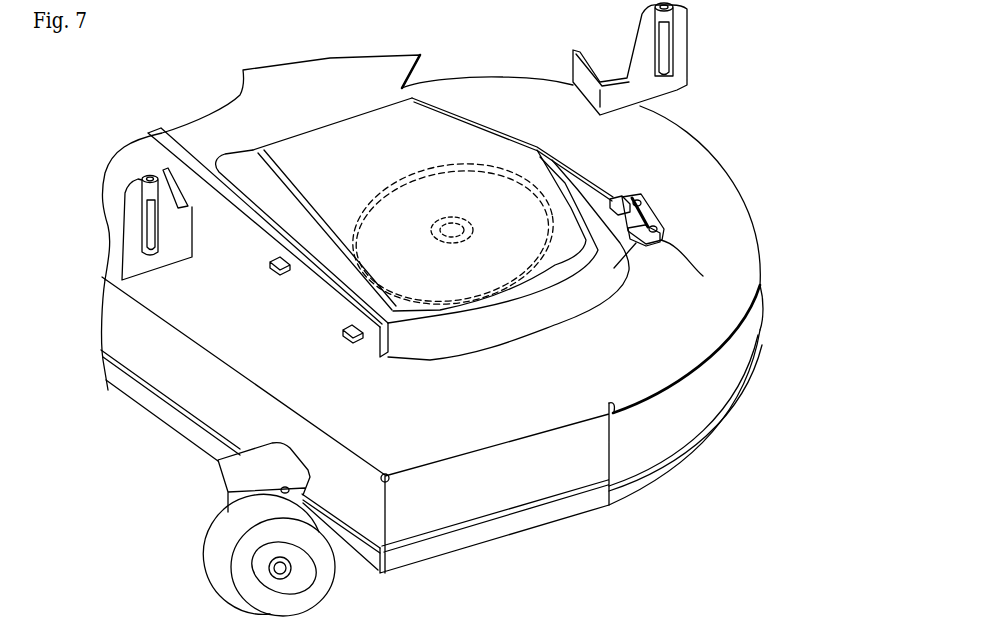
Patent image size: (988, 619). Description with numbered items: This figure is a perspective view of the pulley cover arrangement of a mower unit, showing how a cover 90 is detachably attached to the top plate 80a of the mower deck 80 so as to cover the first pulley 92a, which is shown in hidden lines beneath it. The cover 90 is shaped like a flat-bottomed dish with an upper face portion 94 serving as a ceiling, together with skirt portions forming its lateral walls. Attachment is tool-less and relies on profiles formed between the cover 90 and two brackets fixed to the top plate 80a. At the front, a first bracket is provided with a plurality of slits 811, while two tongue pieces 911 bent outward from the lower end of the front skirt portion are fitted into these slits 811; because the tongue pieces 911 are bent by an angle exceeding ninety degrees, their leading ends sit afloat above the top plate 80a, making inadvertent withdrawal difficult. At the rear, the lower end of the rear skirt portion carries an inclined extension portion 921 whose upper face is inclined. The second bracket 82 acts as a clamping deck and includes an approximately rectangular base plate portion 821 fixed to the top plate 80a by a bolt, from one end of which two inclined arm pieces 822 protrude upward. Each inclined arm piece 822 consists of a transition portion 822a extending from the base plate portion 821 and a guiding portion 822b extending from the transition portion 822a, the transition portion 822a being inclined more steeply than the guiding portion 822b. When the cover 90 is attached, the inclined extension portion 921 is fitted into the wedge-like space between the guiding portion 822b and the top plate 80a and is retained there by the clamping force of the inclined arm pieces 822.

The mower deck 80 is at (651, 488).
The top plate 80a is at (485, 92).
The slits 811 is at (332, 287).
The cover 90 is at (490, 340).
The upper face portion 94 is at (327, 152).
The inclined extension portion 921 is at (592, 195).
The first pulley 92a is at (463, 162).
The tongue pieces 911 is at (263, 268).
The second bracket 82 is at (681, 237).
The base plate portion 821 is at (650, 212).
The inclined arm pieces 822 is at (681, 264).
The transition portion 822a is at (687, 262).
The guiding portion 822b is at (634, 243).